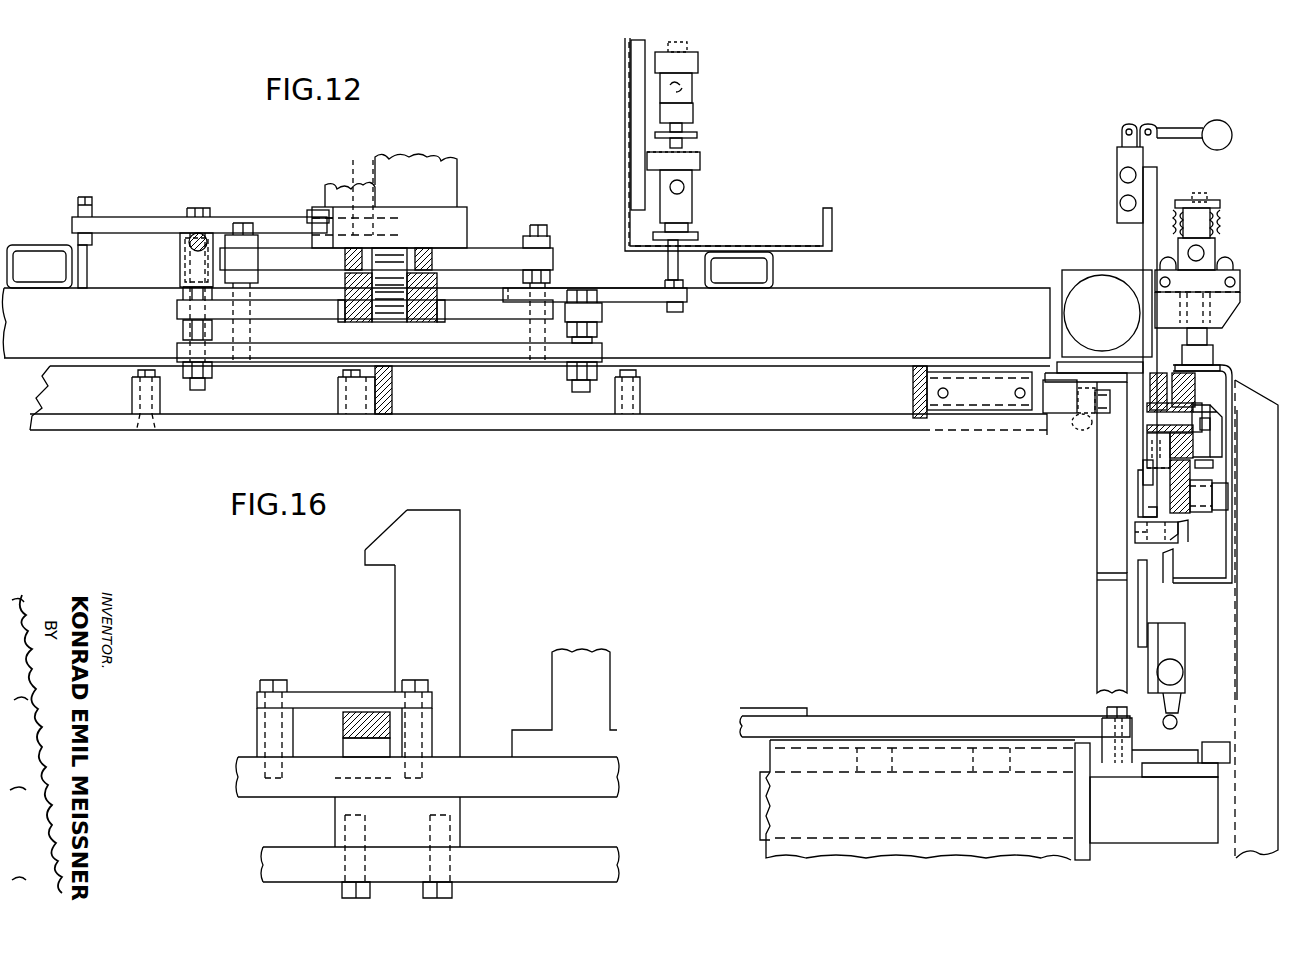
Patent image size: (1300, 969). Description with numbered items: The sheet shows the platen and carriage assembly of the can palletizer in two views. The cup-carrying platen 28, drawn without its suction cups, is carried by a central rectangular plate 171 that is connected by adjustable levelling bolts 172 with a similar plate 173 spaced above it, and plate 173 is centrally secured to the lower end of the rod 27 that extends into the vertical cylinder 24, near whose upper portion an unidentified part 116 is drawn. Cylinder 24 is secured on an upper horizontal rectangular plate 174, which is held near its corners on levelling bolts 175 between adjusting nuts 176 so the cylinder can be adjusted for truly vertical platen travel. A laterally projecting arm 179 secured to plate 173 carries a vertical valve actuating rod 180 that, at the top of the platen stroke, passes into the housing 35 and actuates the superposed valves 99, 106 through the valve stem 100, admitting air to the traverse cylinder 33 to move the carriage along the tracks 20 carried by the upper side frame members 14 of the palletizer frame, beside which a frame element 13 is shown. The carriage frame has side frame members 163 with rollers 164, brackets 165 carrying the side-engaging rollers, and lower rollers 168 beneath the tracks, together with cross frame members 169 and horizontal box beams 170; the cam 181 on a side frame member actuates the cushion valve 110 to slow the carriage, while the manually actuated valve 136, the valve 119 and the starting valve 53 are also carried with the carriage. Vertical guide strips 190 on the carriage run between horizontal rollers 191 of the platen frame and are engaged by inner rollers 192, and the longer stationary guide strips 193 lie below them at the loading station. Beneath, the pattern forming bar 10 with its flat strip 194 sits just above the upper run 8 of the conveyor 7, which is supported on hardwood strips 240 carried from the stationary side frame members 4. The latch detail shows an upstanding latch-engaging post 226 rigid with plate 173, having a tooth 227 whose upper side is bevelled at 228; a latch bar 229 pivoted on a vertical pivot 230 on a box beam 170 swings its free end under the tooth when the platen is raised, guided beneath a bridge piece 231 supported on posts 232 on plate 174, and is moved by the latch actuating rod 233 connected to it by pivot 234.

In FIG. 12, the stationary side frame members 4 is at (1200, 778).
In FIG. 12, the conveyor 7 is at (1102, 810).
In FIG. 12, the upper run 8 is at (981, 738).
In FIG. 12, the pattern forming bar 10 is at (824, 704).
In FIG. 12, the side panel 13 is at (1268, 624).
In FIG. 12, the upper side frame members 14 is at (1228, 530).
In FIG. 12, the tracks 20 is at (1156, 498).
In FIG. 12, the vertical cylinder 24 is at (456, 186).
In FIG. 16, the vertical cylinder 24 is at (568, 650).
In FIG. 12, the rod 27 is at (402, 174).
In FIG. 12, the platen 28 is at (792, 424).
In FIG. 12, the traverse cylinder 33 is at (1076, 288).
In FIG. 12, the housing 35 is at (626, 90).
In FIG. 12, the manually-actuatable starting valve 53 is at (1180, 713).
In FIG. 12, the valve 99 is at (687, 84).
In FIG. 12, the valve stem 100 is at (701, 228).
In FIG. 12, the normally closed valve 106 is at (687, 188).
In FIG. 12, the cushion valve 110 is at (1240, 247).
In FIG. 12, the upper block portion 116 is at (345, 174).
In FIG. 12, the manually-actuated valve 119 is at (1185, 654).
In FIG. 12, the valve 136 is at (1106, 194).
In FIG. 12, the side frame members 163 is at (1124, 357).
In FIG. 12, the rollers 164 is at (1204, 365).
In FIG. 12, the brackets 165 is at (1208, 443).
In FIG. 12, the lower roller 168 is at (1166, 541).
In FIG. 12, the cross frame members 169 is at (915, 298).
In FIG. 12, the horizontal box beams 170 is at (44, 248).
In FIG. 12, the central rectangular plate 171 is at (485, 364).
In FIG. 12, the adjustable levelling bolts 172 is at (188, 286).
In FIG. 12, the plate 173 is at (467, 307).
In FIG. 16, the plate 173 is at (567, 857).
In FIG. 12, the upper horizontal rectangular plate 174 is at (288, 257).
In FIG. 16, the upper horizontal rectangular plate 174 is at (476, 756).
In FIG. 12, the levelling bolts 175 is at (542, 226).
In FIG. 12, the adjusting nuts 176 is at (548, 246).
In FIG. 12, the laterally projecting arm 179 is at (656, 300).
In FIG. 12, the vertical valve actuating rod 180 is at (666, 276).
In FIG. 12, the cam 181 is at (1182, 380).
In FIG. 12, the vertical guide strips 190 is at (1100, 486).
In FIG. 12, the horizontal rollers 191 is at (1103, 415).
In FIG. 12, the inner roller 192 is at (1086, 428).
In FIG. 12, the guide strips 193 is at (1097, 627).
In FIG. 12, the flat strip 194 is at (928, 716).
In FIG. 16, the latch-engaging post 226 is at (459, 592).
In FIG. 16, the tooth 227 is at (376, 550).
In FIG. 16, the bevel 228 is at (376, 532).
In FIG. 12, the latch bar 229 is at (146, 226).
In FIG. 16, the latch bar 229 is at (346, 712).
In FIG. 12, the vertical pivot 230 is at (86, 200).
In FIG. 16, the bridge piece 231 is at (284, 692).
In FIG. 16, the posts 232 is at (256, 727).
In FIG. 12, the latch actuating rod 233 is at (189, 242).
In FIG. 12, the pivot 234 is at (200, 208).
In FIG. 12, the hardwood strips 240 is at (896, 774).